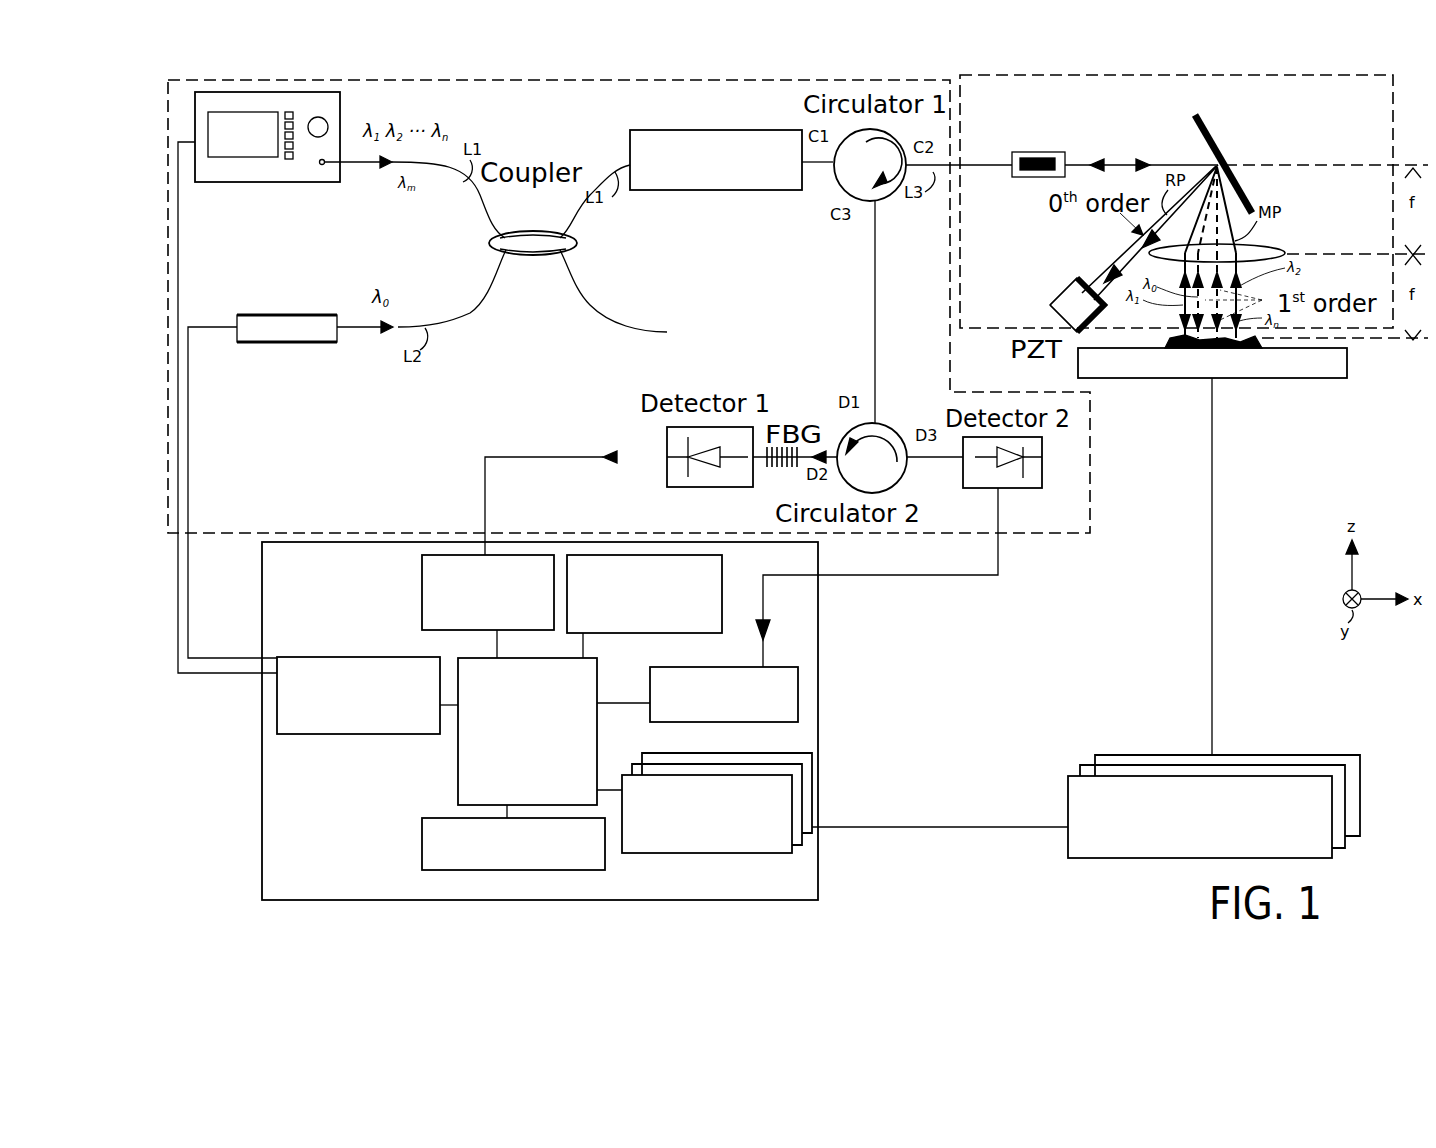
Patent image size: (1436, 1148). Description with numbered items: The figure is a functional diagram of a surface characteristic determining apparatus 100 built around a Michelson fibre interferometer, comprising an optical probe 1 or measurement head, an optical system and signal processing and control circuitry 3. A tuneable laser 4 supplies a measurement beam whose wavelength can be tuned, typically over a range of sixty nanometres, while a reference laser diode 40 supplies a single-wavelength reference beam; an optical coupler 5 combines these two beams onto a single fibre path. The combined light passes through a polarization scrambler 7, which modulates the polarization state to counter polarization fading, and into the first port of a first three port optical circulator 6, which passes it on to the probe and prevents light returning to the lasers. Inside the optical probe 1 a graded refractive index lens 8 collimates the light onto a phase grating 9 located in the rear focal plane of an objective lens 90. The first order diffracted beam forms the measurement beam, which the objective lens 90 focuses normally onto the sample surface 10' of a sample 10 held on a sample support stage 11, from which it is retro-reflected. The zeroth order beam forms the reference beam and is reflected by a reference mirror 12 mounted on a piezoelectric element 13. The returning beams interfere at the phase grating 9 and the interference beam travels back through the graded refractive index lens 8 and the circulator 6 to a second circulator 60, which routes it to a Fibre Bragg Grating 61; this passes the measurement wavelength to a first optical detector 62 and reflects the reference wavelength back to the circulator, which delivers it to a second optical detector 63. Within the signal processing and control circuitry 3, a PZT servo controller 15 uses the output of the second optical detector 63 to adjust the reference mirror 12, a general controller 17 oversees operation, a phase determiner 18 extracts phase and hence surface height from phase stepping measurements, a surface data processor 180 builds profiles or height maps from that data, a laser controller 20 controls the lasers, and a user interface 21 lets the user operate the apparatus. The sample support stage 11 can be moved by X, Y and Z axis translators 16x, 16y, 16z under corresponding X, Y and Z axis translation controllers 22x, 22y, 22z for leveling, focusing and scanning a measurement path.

The optical probe 1 is at (1394, 157).
The signal processing and control circuitry 3 is at (818, 872).
The tuneable laser 4 is at (343, 126).
The optical coupler 5 is at (550, 258).
The first three port optical circulator 6 is at (890, 193).
The polarization scrambler 7 is at (714, 193).
The graded refractive index lens 8 is at (1035, 180).
The phase grating 9 is at (1212, 148).
The sample 10 is at (1174, 337).
The sample surface 10' is at (1164, 377).
The sample support stage 11 is at (1250, 378).
The reference mirror 12 is at (1082, 272).
The piezoelectric element 13 is at (1052, 304).
The PZT servo controller 15 is at (705, 667).
The X axis translator 16x is at (1225, 777).
The Y axis translator 16y is at (1272, 767).
The Z axis translator 16z is at (1325, 757).
The general controller 17 is at (458, 756).
The phase determiner 18 is at (422, 594).
The laser controller 20 is at (330, 736).
The user interface 21 is at (422, 845).
The X axis translation controller 22x is at (628, 775).
The Y axis translation controller 22y is at (732, 766).
The Z axis translation controller 22z is at (777, 756).
The reference laser diode 40 is at (294, 316).
The second circulator 60 is at (884, 426).
The Fibre Bragg Grating 61 is at (775, 467).
The first optical detector 62 is at (688, 487).
The second optical detector 63 is at (967, 488).
The objective lens 90 is at (1265, 249).
The surface characteristic determining apparatus 100 is at (1292, 516).
The surface data processor 180 is at (612, 633).